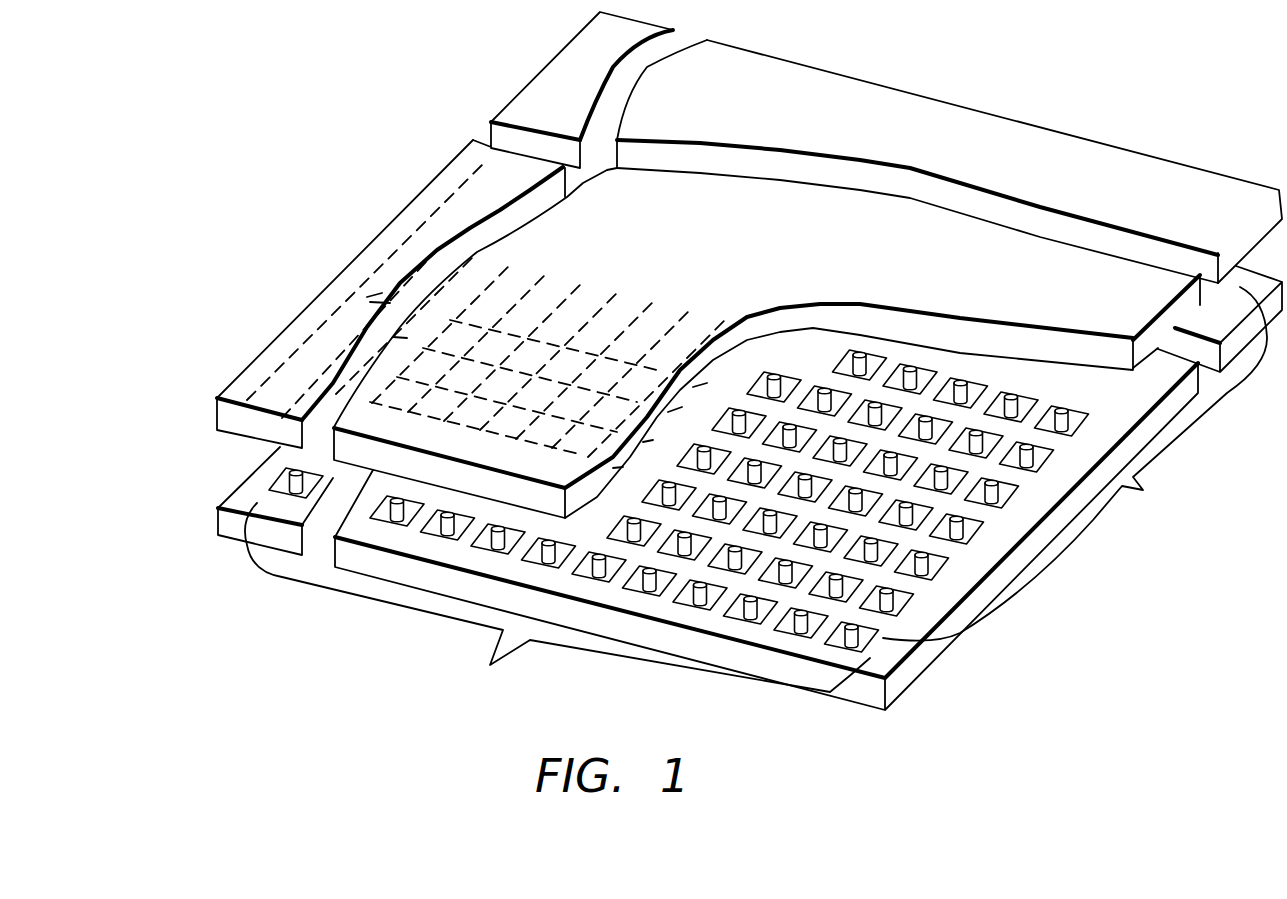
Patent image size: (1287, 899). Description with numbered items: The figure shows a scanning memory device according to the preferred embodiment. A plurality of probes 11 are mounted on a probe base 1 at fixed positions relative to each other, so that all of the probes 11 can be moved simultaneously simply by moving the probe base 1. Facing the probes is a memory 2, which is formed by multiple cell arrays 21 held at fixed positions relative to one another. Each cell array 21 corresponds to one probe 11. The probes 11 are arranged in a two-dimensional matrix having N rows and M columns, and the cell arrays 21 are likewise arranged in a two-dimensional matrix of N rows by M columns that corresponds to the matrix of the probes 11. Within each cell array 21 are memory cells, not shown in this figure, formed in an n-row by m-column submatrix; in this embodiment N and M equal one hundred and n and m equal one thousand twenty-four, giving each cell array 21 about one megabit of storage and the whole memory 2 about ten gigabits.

The probe base 1 is at (222, 560).
The memory 2 is at (233, 360).
The probe 11 is at (850, 632).
The cell array 21 is at (453, 328).